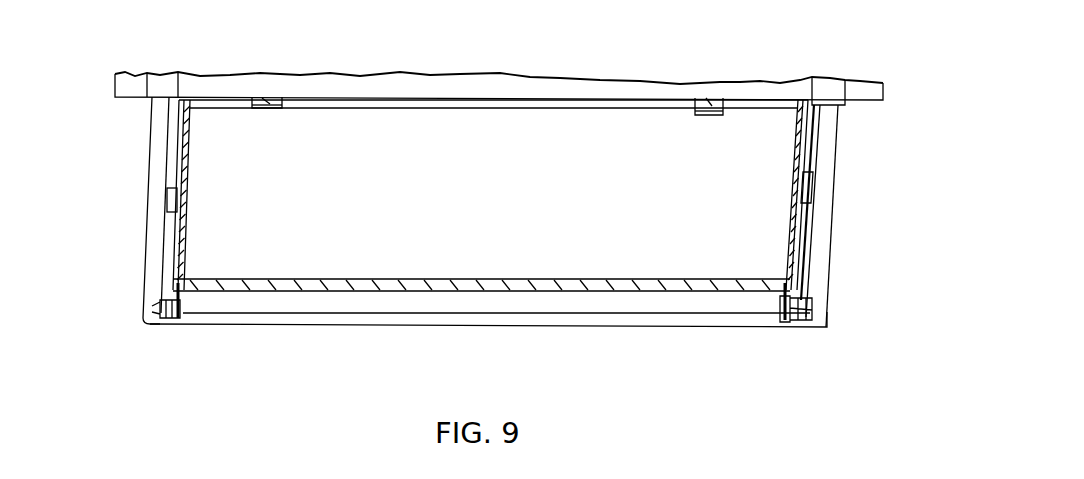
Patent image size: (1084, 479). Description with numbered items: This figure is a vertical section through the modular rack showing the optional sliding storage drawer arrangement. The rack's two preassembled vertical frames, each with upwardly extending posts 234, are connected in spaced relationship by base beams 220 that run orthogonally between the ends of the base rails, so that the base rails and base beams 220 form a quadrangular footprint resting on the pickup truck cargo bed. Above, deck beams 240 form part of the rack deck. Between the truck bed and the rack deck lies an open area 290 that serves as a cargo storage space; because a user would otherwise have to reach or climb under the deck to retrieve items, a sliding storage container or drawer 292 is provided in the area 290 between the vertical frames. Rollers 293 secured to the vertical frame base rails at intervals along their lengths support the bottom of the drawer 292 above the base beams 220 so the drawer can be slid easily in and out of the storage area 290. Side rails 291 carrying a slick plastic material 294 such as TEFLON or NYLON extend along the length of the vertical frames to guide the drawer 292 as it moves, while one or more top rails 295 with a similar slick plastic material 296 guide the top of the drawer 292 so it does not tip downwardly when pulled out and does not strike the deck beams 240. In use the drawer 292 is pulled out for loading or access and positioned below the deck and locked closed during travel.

The deck beams 240 is at (507, 80).
The posts 234 is at (163, 180).
The side rails 291 is at (172, 213).
The slick plastic material 294 is at (177, 198).
The slick plastic material 296 is at (284, 96).
The top rails 295 is at (267, 100).
The sliding storage container or drawer 292 is at (436, 286).
The base beams 220 is at (233, 322).
The area 290 is at (427, 223).
The rollers 293 is at (178, 320).